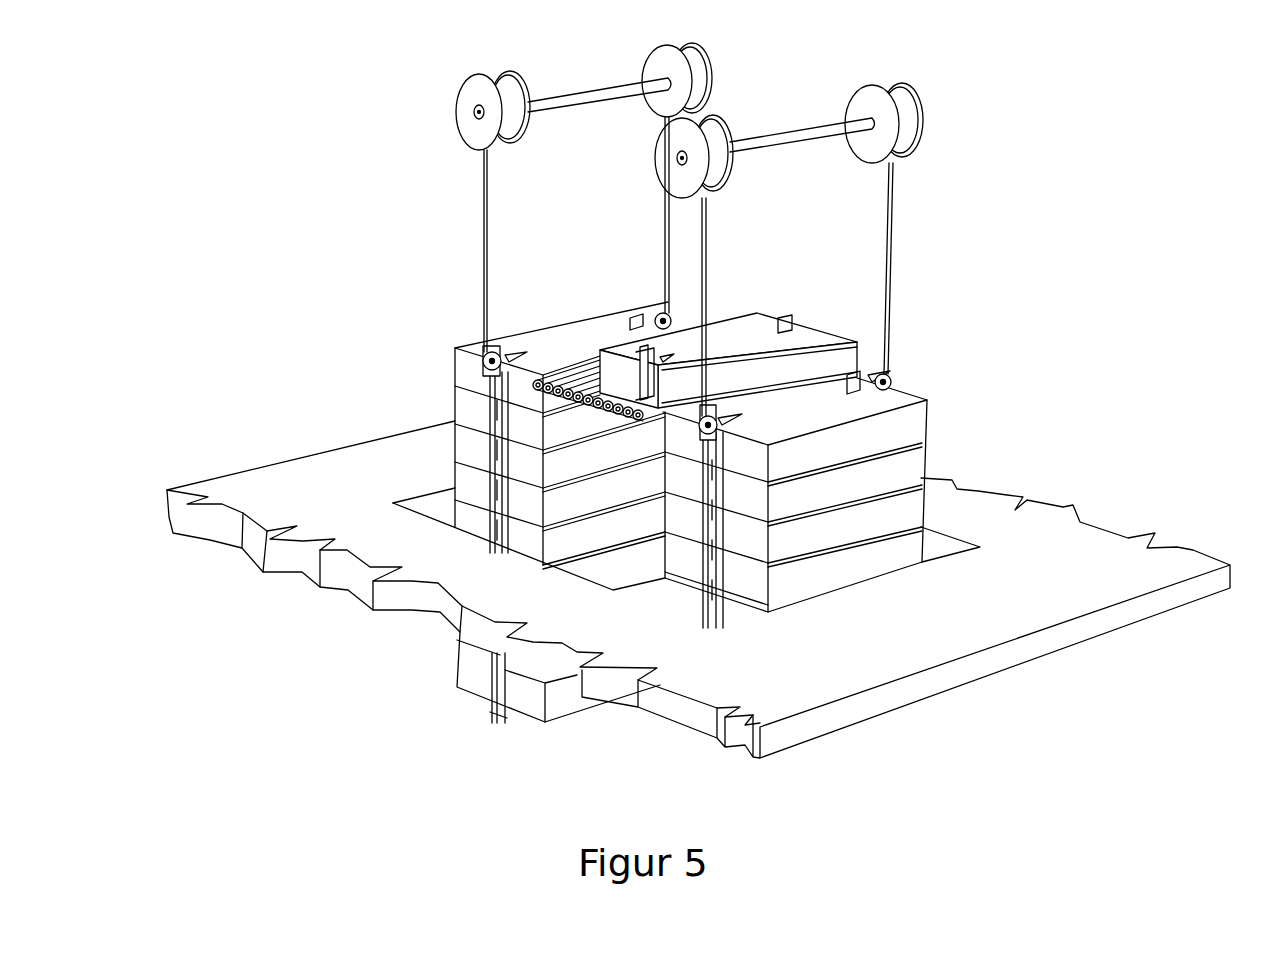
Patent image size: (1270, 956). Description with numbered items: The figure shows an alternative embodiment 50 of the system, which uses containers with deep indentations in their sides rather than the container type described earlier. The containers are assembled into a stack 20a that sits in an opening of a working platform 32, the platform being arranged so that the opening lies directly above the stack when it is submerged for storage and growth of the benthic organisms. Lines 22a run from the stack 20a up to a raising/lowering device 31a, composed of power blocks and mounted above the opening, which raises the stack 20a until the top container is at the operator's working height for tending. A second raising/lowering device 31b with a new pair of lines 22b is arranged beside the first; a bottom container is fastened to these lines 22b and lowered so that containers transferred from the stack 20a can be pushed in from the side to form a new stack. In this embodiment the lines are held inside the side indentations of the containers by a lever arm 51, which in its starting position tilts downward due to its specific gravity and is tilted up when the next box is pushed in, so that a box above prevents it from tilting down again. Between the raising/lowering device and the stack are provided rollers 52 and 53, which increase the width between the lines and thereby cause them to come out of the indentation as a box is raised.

The stack of containers 20a is at (553, 318).
The lines 22a is at (476, 222).
The lines 22b is at (898, 253).
The raising/lowering device 31a is at (710, 55).
The raising/lowering device 31b is at (923, 90).
The working platform 32 is at (1007, 625).
The alternative embodiment of the system 50 is at (1050, 317).
The lever arm 51 is at (490, 357).
The roller 52 is at (517, 353).
The roller 53 is at (503, 370).